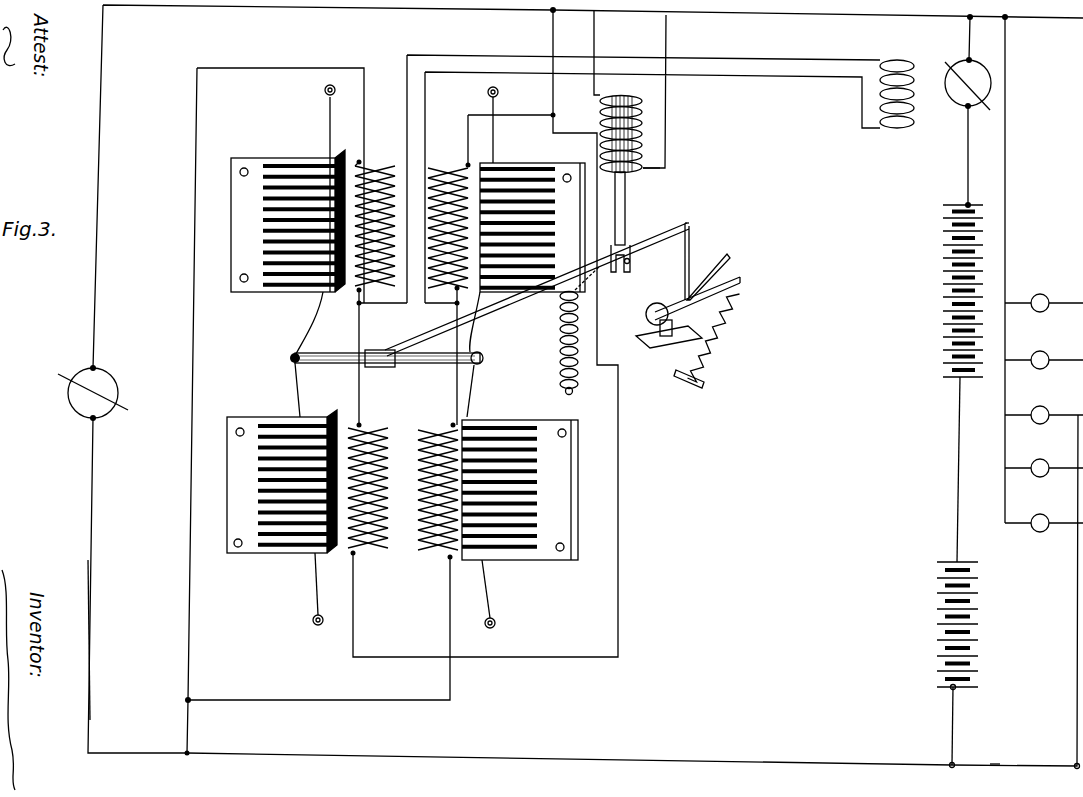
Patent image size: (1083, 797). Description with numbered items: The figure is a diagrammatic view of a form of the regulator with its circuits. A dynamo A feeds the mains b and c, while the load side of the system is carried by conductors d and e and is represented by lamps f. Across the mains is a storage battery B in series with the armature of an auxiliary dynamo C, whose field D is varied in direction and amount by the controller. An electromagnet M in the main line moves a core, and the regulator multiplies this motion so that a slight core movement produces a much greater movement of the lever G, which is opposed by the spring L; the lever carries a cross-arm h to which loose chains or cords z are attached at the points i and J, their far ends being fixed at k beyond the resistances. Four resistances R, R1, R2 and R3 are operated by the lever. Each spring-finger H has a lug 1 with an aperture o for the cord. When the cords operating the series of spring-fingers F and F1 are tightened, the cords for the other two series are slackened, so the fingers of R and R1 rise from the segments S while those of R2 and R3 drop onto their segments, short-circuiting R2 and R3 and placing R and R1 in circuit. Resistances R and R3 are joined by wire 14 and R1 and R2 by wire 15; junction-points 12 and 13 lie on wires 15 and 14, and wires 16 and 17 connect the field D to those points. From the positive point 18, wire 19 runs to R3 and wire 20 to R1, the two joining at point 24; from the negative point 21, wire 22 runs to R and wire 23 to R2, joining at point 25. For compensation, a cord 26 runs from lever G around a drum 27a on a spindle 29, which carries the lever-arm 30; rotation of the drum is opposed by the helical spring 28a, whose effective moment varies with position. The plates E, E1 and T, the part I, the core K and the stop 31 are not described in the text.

The lug 1 is at (563, 302).
The junction-point 12 is at (382, 357).
The junction-point 13 is at (440, 356).
The wire 14 is at (465, 380).
The wire 15 is at (348, 396).
The wire 16 is at (742, 62).
The wire 17 is at (745, 76).
The point 18 is at (545, 12).
The wire 19 is at (553, 42).
The wire 20 is at (628, 506).
The point 21 is at (186, 752).
The wire 22 is at (449, 607).
The wire 23 is at (189, 617).
The point 24 is at (521, 138).
The point 25 is at (189, 699).
The cord 26 is at (690, 238).
The disk or drum 27a is at (630, 330).
The helical spring 28a is at (718, 348).
The spindle 29 is at (660, 303).
The lever-arm 30 is at (742, 282).
The stop 31 is at (672, 377).
The dynamo A is at (112, 414).
The storage battery B is at (970, 680).
The auxiliary dynamo C is at (93, 134).
The main c is at (961, 109).
The field D is at (892, 136).
The resistance plate E2 E is at (266, 147).
The resistance plate E1 is at (245, 556).
The series of spring-fingers F is at (503, 143).
The series of spring-fingers F1 is at (547, 484).
The lever G is at (560, 318).
The spring-finger H is at (263, 218).
The pivot I is at (483, 357).
The point J is at (476, 391).
The armature core K is at (626, 208).
The spring L is at (580, 338).
The electromagnet M is at (676, 140).
The resistance R is at (440, 552).
The resistance R1 is at (385, 432).
The resistance R2 is at (372, 165).
The resistance R3 is at (437, 165).
The segments S is at (395, 296).
The terminal plate T is at (532, 210).
The main b is at (90, 716).
The conductor d is at (1020, 18).
The conductor e is at (996, 764).
The lamps f is at (1036, 530).
The cross-arm h is at (387, 370).
The point i is at (290, 356).
The end k is at (495, 623).
The aperture o is at (653, 180).
The chain, cord, or tape z is at (485, 600).